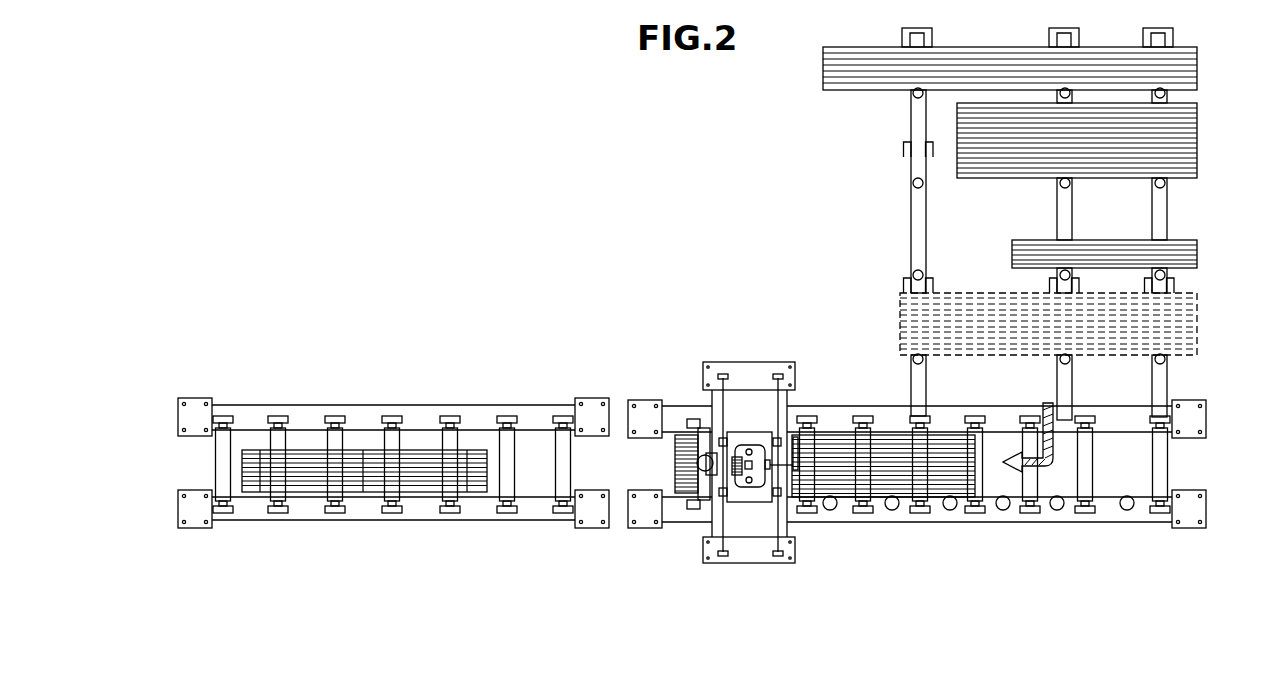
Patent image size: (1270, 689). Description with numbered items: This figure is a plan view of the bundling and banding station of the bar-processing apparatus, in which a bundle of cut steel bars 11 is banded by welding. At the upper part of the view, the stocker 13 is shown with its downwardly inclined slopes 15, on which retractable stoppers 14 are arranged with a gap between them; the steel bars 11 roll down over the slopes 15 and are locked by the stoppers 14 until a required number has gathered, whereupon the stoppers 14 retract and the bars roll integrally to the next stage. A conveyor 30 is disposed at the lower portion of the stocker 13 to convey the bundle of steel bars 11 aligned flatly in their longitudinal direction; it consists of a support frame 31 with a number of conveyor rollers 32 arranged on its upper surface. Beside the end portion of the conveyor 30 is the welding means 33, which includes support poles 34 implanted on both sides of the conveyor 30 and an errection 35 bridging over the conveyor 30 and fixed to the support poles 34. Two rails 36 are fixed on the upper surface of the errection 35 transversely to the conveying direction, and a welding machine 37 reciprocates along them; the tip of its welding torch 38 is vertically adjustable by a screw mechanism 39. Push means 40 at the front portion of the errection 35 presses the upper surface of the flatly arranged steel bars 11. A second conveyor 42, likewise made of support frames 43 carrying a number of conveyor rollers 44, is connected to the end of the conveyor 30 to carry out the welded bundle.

The steel bars 11 is at (1183, 75).
The stocker 13 is at (753, 304).
The stoppers 14 is at (912, 95).
The slopes 15 is at (911, 232).
The conveyor 30 is at (1068, 527).
The support frame 31 is at (1113, 517).
The conveyor rollers 32 is at (1032, 496).
The welding means 33 is at (761, 458).
The support poles 34 is at (755, 360).
The errection 35 is at (786, 400).
The rails 36 is at (778, 405).
The welding machine 37 is at (752, 504).
The welding torch 38 is at (796, 462).
The screw mechanism 39 is at (748, 482).
The push means 40 is at (701, 467).
The second conveyor 42 is at (464, 524).
The support frames 43 is at (527, 515).
The conveyor rollers 44 is at (510, 447).